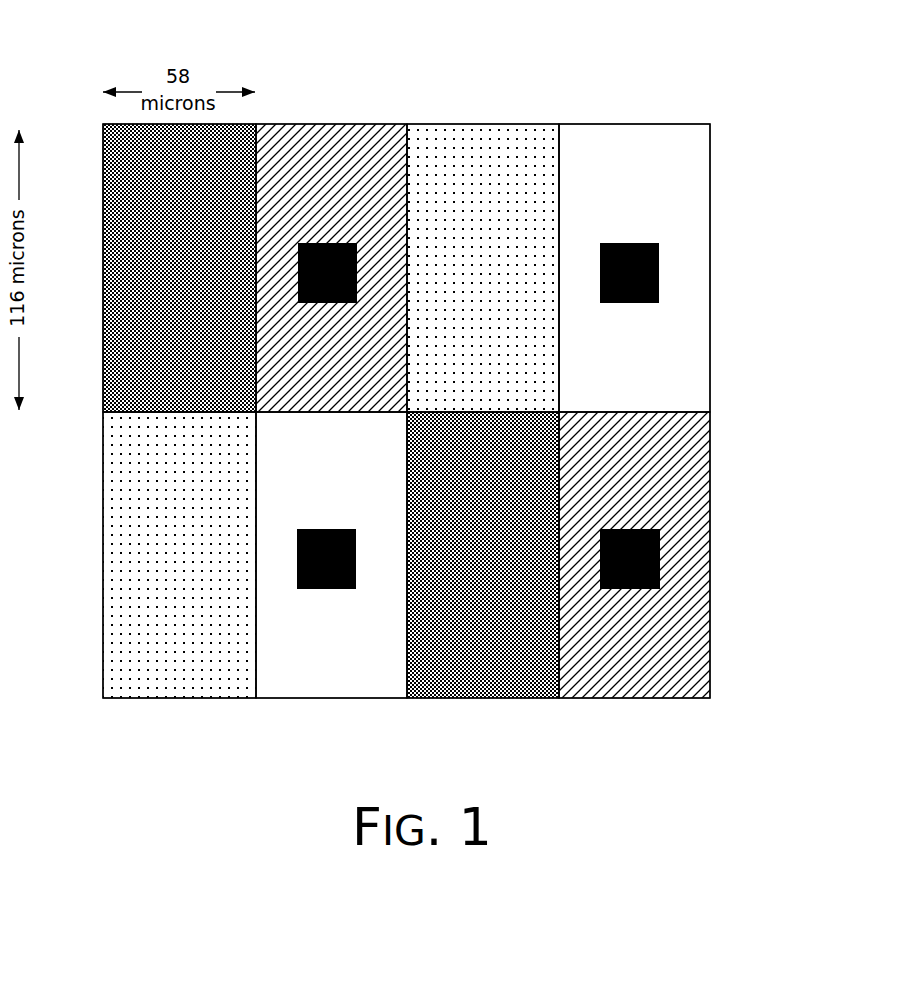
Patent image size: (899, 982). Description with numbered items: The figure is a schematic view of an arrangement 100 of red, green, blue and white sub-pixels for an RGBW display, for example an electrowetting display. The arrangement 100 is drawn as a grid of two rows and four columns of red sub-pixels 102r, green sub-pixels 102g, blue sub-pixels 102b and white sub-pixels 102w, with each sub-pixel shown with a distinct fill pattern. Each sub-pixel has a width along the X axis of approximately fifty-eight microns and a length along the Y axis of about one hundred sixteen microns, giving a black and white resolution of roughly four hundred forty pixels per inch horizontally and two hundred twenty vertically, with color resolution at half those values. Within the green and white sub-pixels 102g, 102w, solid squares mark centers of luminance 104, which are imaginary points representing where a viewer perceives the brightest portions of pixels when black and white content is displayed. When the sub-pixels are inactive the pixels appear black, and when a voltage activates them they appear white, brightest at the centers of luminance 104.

The arrangement 100 is at (834, 84).
The red sub-pixel 102r is at (150, 204).
The green sub-pixel 102g is at (347, 204).
The blue sub-pixel 102b is at (499, 204).
The white sub-pixel 102w is at (663, 204).
The center of luminance 104 is at (358, 270).